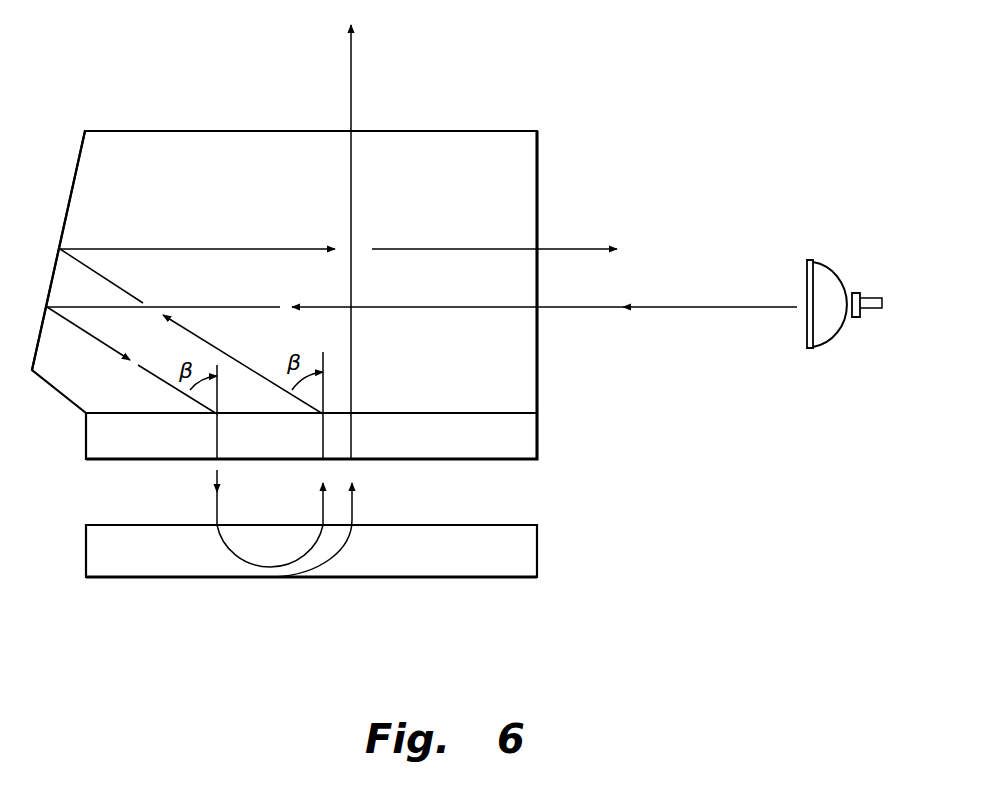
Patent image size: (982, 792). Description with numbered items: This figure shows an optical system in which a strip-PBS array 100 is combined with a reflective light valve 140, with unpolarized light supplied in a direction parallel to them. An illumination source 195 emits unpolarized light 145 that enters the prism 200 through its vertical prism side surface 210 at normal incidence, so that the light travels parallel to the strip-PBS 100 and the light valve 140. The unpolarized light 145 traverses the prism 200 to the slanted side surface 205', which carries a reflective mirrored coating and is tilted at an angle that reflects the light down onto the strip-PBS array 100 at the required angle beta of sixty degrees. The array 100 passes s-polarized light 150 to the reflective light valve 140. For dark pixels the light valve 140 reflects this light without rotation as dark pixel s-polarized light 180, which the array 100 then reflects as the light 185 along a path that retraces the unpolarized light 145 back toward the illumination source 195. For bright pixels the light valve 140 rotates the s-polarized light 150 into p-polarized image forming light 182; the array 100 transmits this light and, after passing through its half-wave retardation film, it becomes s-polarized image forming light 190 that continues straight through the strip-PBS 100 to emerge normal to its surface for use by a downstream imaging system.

The prism slanted side surface 205' is at (60, 218).
The s-polarized image forming light 190 is at (352, 105).
The vertical prism side surface 210 is at (537, 155).
The dark pixel s-polarized light reflected from the PBS coating 185 is at (592, 240).
The unpolarized light 145 is at (688, 307).
The illumination source 195 is at (822, 335).
The prism 200 is at (517, 365).
The strip-PBS array 100 is at (508, 445).
The reflective light valve 140 is at (505, 563).
The s-polarized light 150 is at (215, 515).
The dark pixel s-polarized light 180 is at (322, 517).
The p-polarized image forming light 182 is at (350, 517).